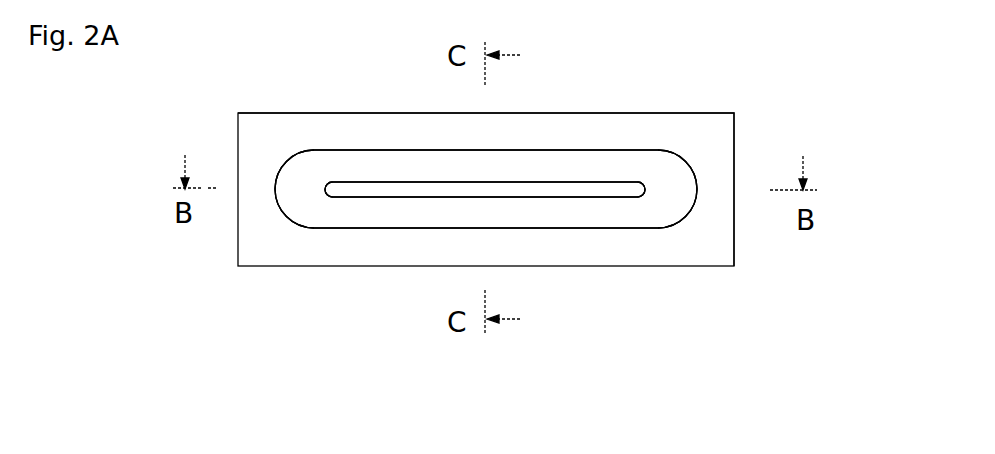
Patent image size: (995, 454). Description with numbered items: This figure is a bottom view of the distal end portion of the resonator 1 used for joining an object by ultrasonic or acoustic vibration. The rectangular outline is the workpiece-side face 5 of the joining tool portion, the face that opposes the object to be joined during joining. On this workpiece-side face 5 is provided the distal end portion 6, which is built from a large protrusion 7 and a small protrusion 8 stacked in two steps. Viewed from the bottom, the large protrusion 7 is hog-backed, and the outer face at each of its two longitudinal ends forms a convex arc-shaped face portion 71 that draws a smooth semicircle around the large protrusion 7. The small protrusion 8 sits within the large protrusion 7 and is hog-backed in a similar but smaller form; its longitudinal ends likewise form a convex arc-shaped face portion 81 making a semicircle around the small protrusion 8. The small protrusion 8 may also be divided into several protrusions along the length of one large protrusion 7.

The resonator 1 is at (706, 113).
The workpiece-side face 5 is at (715, 128).
The distal end portion 6 is at (333, 368).
The large protrusion 7 is at (297, 213).
The small protrusion 8 is at (347, 194).
The convex arc-shaped face portion 71 is at (282, 164).
The convex arc-shaped face portion 81 is at (325, 185).